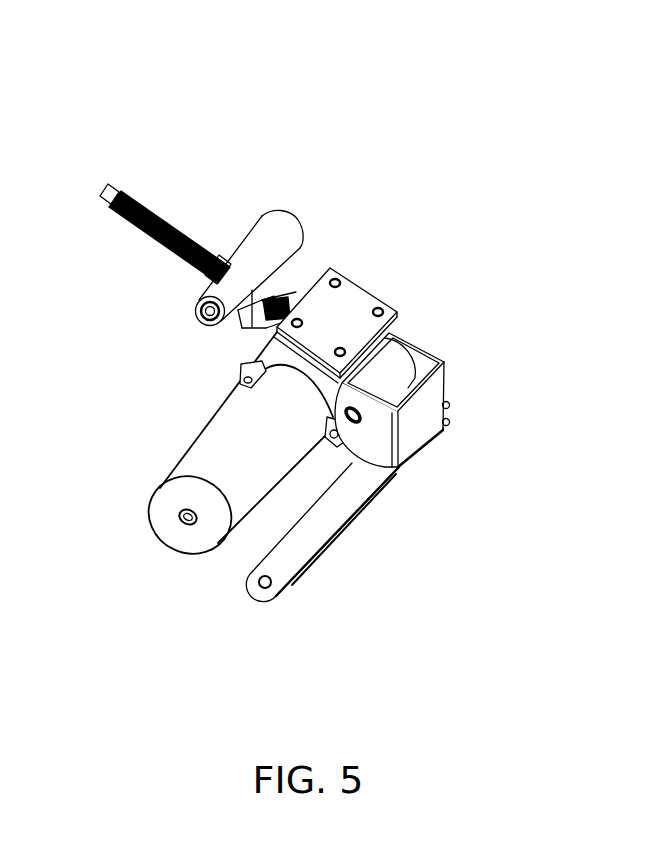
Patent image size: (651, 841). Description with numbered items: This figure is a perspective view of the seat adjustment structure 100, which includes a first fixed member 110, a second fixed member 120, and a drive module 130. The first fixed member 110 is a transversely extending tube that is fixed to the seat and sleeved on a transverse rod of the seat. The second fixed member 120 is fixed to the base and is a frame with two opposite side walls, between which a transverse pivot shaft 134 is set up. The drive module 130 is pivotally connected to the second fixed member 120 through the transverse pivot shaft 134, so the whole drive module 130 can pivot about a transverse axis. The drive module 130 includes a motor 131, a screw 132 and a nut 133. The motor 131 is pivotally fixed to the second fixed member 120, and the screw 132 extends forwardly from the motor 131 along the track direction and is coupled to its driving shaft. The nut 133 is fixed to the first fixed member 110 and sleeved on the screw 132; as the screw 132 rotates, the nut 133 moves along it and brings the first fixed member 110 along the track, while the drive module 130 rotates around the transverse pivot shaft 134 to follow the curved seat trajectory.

The seat adjustment structure 100 is at (20, 35).
The first fixed member 110 is at (272, 242).
The second fixed member 120 is at (442, 428).
The drive module 130 is at (462, 146).
The motor 131 is at (352, 327).
The screw 132 is at (331, 268).
The nut 133 is at (273, 297).
The transverse pivot shaft 134 is at (400, 465).